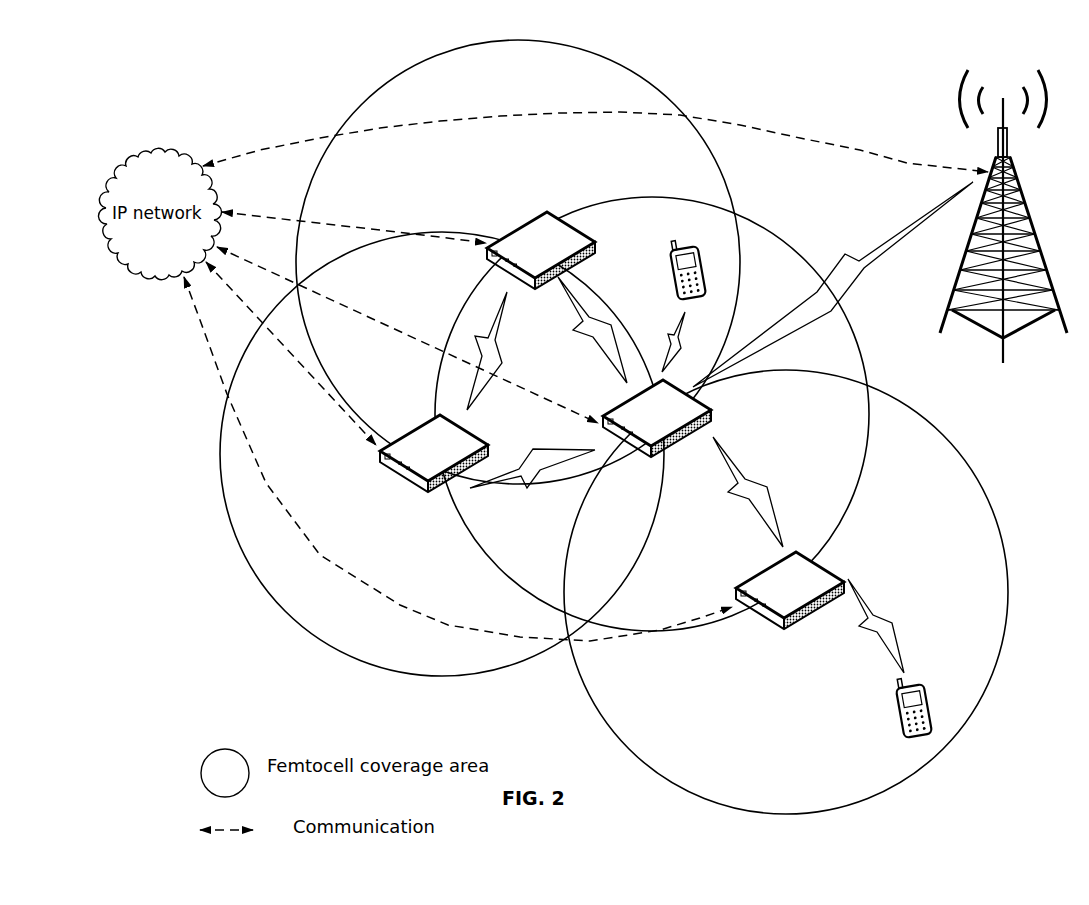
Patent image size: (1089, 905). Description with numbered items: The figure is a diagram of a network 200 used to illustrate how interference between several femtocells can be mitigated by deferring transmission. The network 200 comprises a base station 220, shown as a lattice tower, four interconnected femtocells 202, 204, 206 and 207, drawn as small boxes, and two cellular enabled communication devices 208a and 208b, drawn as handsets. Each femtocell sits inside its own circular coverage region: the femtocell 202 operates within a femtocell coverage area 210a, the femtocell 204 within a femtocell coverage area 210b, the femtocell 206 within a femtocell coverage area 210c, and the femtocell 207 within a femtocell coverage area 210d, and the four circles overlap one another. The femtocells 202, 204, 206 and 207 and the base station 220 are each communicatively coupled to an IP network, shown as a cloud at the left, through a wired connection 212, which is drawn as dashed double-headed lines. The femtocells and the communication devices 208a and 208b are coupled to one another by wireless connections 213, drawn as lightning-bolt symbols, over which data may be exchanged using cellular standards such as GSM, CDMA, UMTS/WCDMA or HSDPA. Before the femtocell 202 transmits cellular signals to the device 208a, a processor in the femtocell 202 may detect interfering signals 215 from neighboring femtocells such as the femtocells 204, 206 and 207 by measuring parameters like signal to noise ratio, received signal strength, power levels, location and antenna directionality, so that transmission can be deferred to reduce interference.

The network 200 is at (215, 118).
The femtocell 202 is at (535, 220).
The femtocell 204 is at (603, 411).
The femtocell 206 is at (734, 593).
The femtocell 207 is at (378, 459).
The cellular enabled communication device 208a is at (673, 289).
The cellular enabled communication device 208b is at (900, 718).
The femtocell coverage area 210a is at (303, 213).
The femtocell coverage area 210b is at (474, 530).
The femtocell coverage area 210c is at (586, 662).
The femtocell coverage area 210d is at (222, 431).
The wired connection 212 is at (292, 141).
The wireless connections 213 is at (491, 349).
The interfering signals 215 is at (518, 491).
The base station 220 is at (1013, 188).